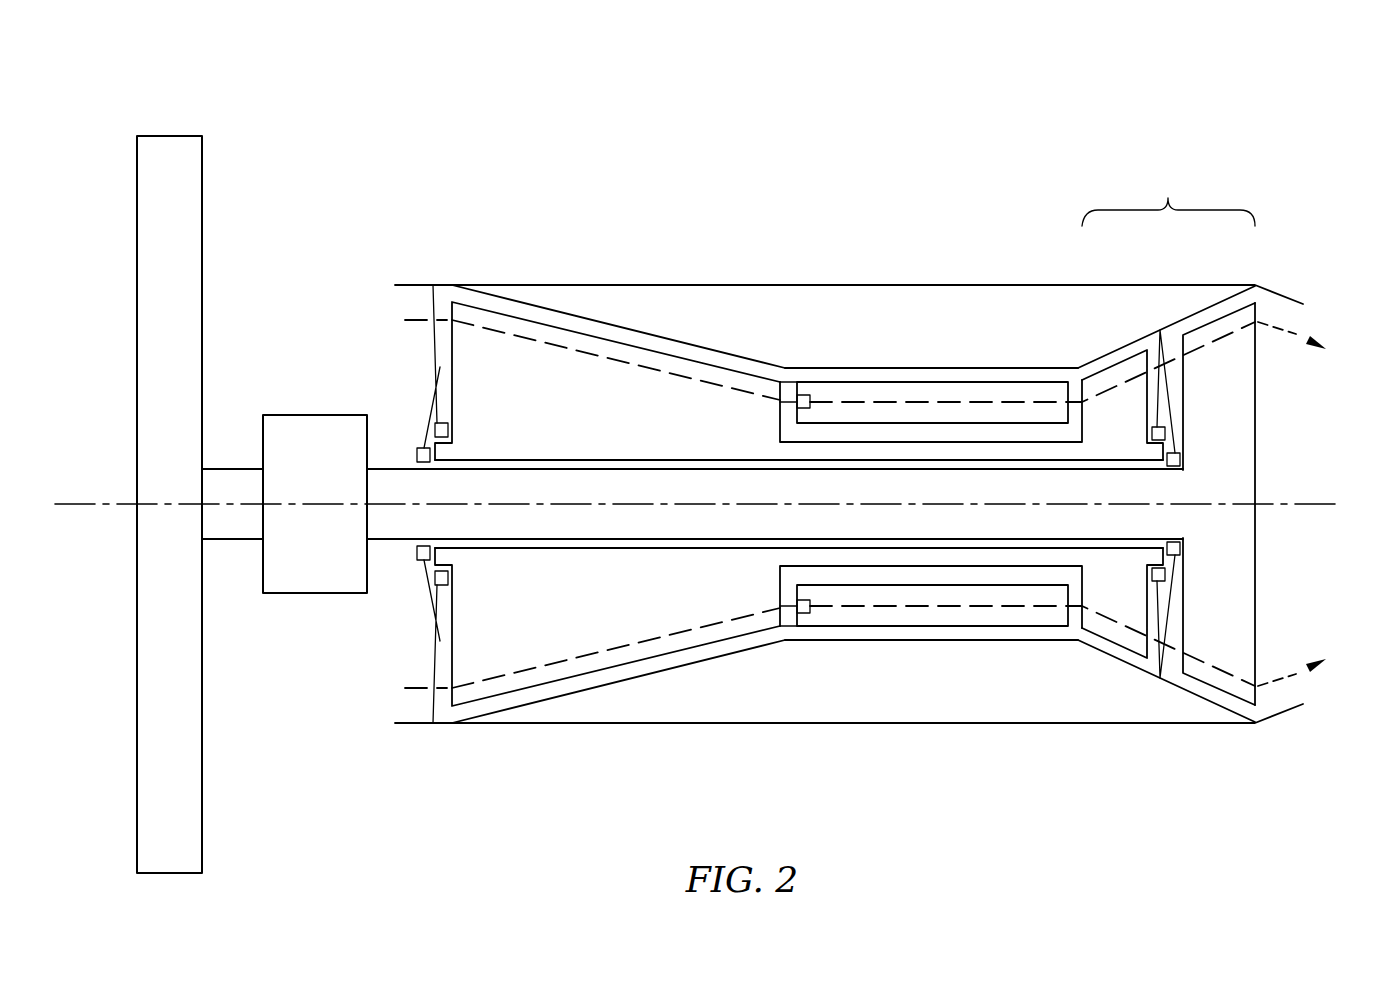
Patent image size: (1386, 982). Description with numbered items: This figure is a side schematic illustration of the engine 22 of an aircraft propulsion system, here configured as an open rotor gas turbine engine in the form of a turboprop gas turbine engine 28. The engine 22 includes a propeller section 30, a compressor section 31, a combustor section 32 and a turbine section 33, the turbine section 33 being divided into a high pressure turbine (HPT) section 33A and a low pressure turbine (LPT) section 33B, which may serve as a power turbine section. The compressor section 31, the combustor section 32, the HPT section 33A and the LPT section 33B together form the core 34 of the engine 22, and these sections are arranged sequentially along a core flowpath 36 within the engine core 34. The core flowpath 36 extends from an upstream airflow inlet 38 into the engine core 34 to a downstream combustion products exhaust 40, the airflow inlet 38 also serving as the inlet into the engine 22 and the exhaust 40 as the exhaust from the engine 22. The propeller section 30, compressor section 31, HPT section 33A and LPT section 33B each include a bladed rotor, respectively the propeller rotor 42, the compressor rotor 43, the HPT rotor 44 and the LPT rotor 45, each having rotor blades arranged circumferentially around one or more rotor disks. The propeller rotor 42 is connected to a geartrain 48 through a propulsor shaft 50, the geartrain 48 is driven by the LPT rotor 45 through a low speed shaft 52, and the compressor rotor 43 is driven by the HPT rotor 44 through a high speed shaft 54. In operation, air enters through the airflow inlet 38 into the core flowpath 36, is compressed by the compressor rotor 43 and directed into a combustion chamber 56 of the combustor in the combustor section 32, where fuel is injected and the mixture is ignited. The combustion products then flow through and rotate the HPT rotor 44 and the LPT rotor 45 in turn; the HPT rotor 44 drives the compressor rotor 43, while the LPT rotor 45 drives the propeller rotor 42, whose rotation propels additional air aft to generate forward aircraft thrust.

The engine 22 is at (1126, 112).
The turboprop gas turbine engine 28 is at (1167, 79).
The propeller section 30 is at (194, 112).
The compressor section 31 is at (637, 310).
The combustor section 32 is at (915, 357).
The turbine section 33 is at (1168, 196).
The high pressure turbine (HPT) section 33A is at (1120, 347).
The low pressure turbine (LPT) section 33B is at (1213, 305).
The core 34 is at (767, 212).
The core flowpath 36 is at (540, 342).
The airflow inlet 38 is at (405, 306).
The combustion products exhaust 40 is at (1300, 320).
The propeller rotor 42 is at (137, 292).
The compressor rotor 43 is at (440, 360).
The HPT rotor 44 is at (1100, 370).
The LPT rotor 45 is at (1257, 402).
The geartrain 48 is at (313, 593).
The propulsor shaft 50 is at (220, 540).
The low speed shaft 52 is at (399, 540).
The high speed shaft 54 is at (757, 461).
The combustion chamber 56 is at (857, 388).